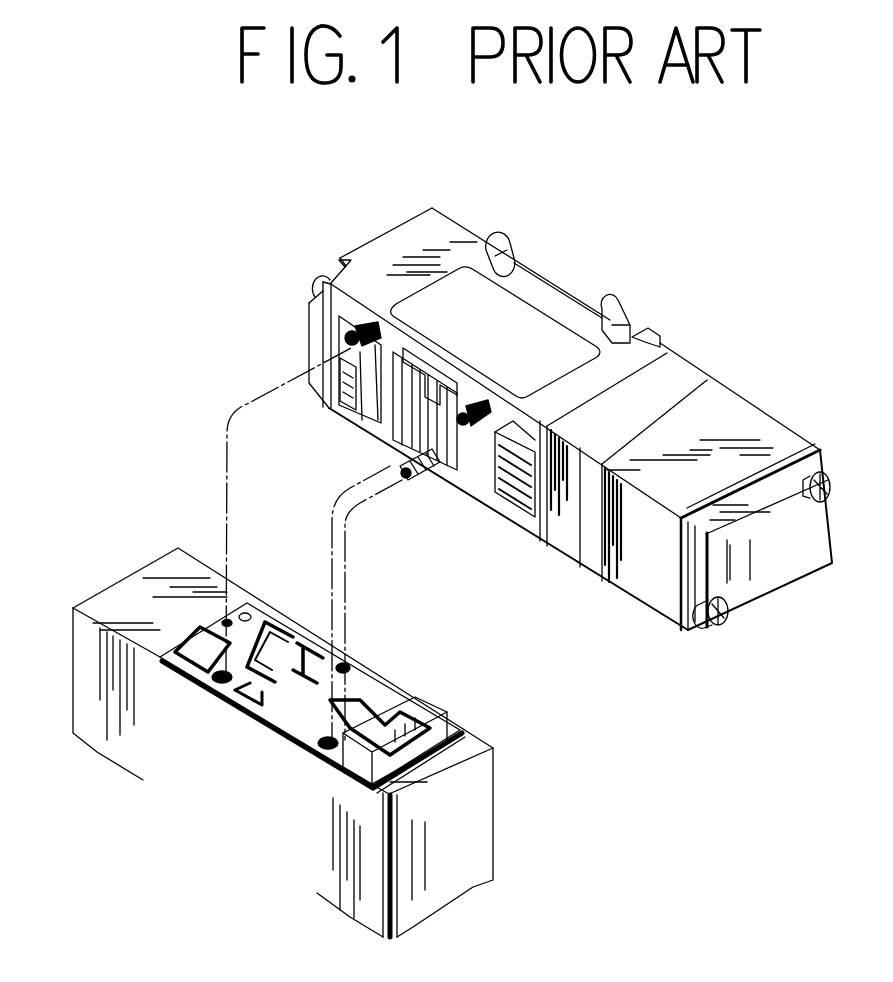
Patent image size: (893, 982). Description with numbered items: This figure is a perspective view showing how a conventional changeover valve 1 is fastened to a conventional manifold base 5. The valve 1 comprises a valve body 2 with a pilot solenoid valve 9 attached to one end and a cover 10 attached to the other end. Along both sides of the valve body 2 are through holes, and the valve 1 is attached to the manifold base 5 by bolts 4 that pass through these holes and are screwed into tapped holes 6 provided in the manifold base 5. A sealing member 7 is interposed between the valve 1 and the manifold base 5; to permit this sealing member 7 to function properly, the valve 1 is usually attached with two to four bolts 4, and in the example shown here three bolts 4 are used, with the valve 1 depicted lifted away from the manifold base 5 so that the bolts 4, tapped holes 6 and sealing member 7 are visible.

The changeover valve 1 is at (712, 274).
The valve body 2 is at (470, 238).
The bolts 4 is at (353, 332).
The manifold base 5 is at (483, 790).
The tapped holes 6 is at (347, 665).
The sealing member 7 is at (263, 610).
The pilot solenoid valve 9 is at (759, 424).
The cover 10 is at (393, 237).